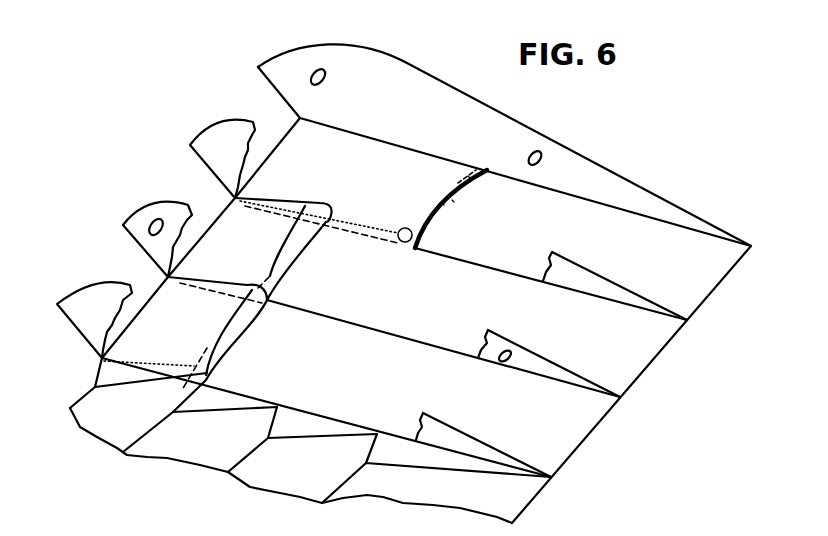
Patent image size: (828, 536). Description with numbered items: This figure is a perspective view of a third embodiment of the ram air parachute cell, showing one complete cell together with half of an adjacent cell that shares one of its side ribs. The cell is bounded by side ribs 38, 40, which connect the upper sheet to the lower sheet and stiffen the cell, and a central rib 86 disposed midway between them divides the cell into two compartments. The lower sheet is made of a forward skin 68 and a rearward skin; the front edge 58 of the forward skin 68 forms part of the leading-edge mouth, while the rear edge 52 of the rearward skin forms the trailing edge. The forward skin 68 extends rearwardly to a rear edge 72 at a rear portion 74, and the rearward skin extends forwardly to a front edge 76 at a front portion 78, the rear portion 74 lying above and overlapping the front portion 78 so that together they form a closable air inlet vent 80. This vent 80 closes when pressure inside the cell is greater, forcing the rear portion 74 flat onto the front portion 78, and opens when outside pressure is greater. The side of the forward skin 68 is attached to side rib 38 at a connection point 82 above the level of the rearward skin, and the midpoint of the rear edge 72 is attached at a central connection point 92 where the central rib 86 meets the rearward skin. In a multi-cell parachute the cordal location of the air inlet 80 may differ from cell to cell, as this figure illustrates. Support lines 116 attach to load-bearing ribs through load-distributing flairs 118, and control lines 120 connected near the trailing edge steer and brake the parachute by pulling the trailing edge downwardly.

The side rib 38 is at (463, 447).
The side rib 40 is at (580, 282).
The rear edge of lower sheet 52 is at (647, 367).
The front edge of lower sheet 58 is at (217, 218).
The forward skin 68 is at (399, 167).
The rear edge of forward skin 72 is at (468, 176).
The rear portion of forward skin 74 is at (458, 185).
The front edge of rearward skin 76 is at (452, 200).
The front portion of rearward skin 78 is at (450, 250).
The air inlet vent 80 is at (442, 203).
The connection point 82 is at (400, 243).
The central rib 86 is at (588, 181).
The central connection point 92 is at (475, 176).
The support lines 116 is at (248, 455).
The flairs 118 is at (382, 449).
The control lines 120 is at (532, 503).